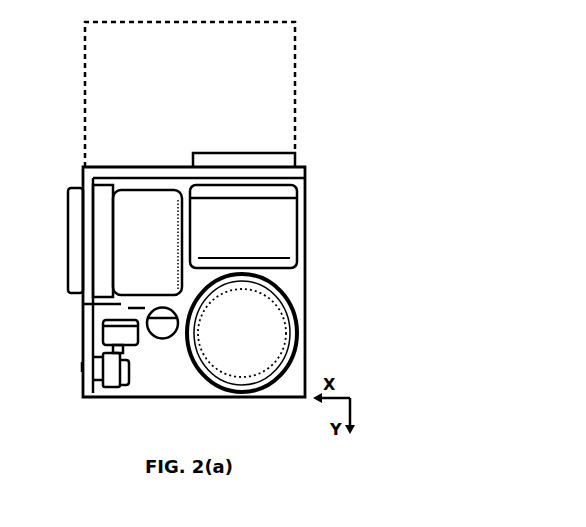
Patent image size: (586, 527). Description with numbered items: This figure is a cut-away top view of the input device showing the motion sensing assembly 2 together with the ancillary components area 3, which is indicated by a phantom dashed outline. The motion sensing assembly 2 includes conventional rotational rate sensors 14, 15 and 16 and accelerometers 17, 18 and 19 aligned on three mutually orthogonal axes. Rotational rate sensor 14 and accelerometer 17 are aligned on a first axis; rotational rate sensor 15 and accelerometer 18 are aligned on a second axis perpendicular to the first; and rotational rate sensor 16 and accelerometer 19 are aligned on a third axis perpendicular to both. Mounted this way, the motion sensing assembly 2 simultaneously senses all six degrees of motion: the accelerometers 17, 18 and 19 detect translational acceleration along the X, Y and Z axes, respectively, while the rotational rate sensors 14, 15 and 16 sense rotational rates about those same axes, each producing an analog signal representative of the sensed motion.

The motion sensing assembly 2 is at (305, 366).
The ancillary components area 3 is at (295, 113).
The rotational rate sensor 14 is at (147, 188).
The rotational rate sensor 15 is at (297, 222).
The rotational rate sensor 16 is at (297, 328).
The accelerometer 17 is at (108, 397).
The accelerometer 18 is at (103, 332).
The accelerometer 19 is at (177, 331).